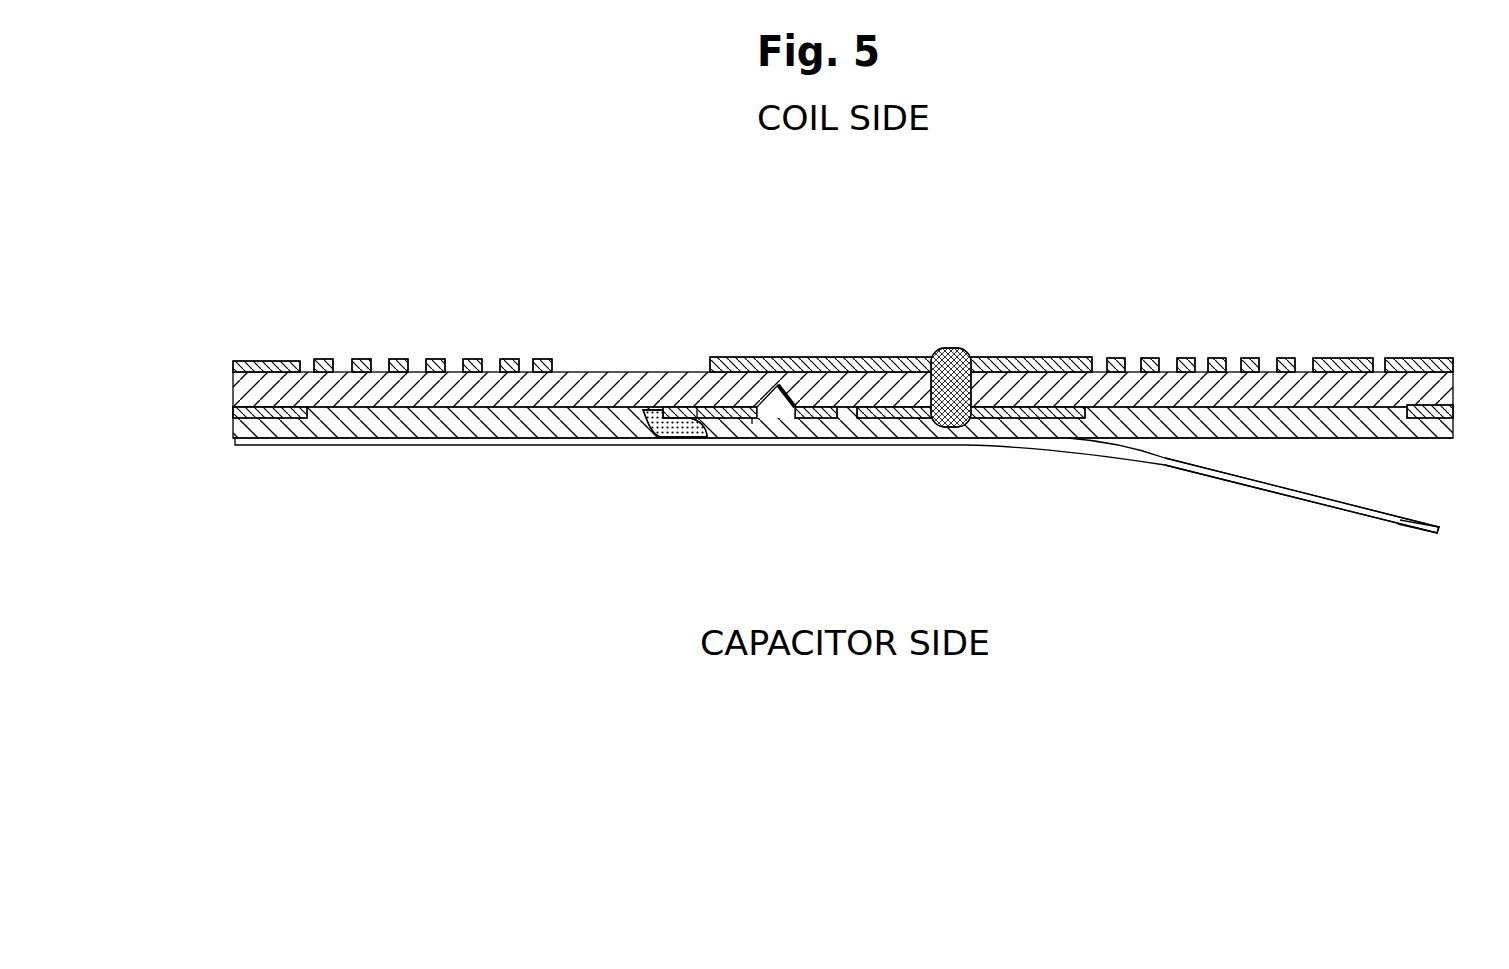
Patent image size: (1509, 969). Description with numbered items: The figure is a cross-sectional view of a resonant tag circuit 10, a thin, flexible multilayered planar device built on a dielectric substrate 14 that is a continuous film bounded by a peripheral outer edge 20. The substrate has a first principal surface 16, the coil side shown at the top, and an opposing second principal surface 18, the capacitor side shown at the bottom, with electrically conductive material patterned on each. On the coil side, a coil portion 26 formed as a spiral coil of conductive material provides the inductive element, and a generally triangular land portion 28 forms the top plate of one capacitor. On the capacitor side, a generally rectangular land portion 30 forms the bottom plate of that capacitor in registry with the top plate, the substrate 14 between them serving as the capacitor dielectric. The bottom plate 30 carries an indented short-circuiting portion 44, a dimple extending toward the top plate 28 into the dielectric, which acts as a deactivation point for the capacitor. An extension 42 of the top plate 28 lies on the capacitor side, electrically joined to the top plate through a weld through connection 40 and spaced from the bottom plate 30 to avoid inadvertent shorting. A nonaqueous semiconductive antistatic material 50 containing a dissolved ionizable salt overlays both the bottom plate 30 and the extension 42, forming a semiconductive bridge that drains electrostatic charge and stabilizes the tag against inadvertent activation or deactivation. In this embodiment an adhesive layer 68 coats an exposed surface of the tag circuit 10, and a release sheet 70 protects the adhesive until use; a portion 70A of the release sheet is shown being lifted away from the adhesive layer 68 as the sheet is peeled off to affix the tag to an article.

The resonant tag circuit 10 is at (796, 398).
The dielectric substrate 14 is at (1367, 622).
The first principal surface 16 is at (607, 372).
The second principal surface 18 is at (477, 408).
The peripheral outer edge 20 is at (233, 400).
The coil portion 26 is at (543, 359).
The land portion (top capacitor plate) 28 is at (855, 357).
The land portion (bottom capacitor plate) 30 is at (752, 422).
The weld through connection 40 is at (946, 348).
The extension 42 is at (863, 487).
The indented short-circuiting portion 44 is at (782, 417).
The semiconductive antistatic material 50 is at (688, 438).
The adhesive layer 68 is at (370, 425).
The release sheet 70 is at (837, 532).
The portion of release sheet 70A is at (1322, 506).